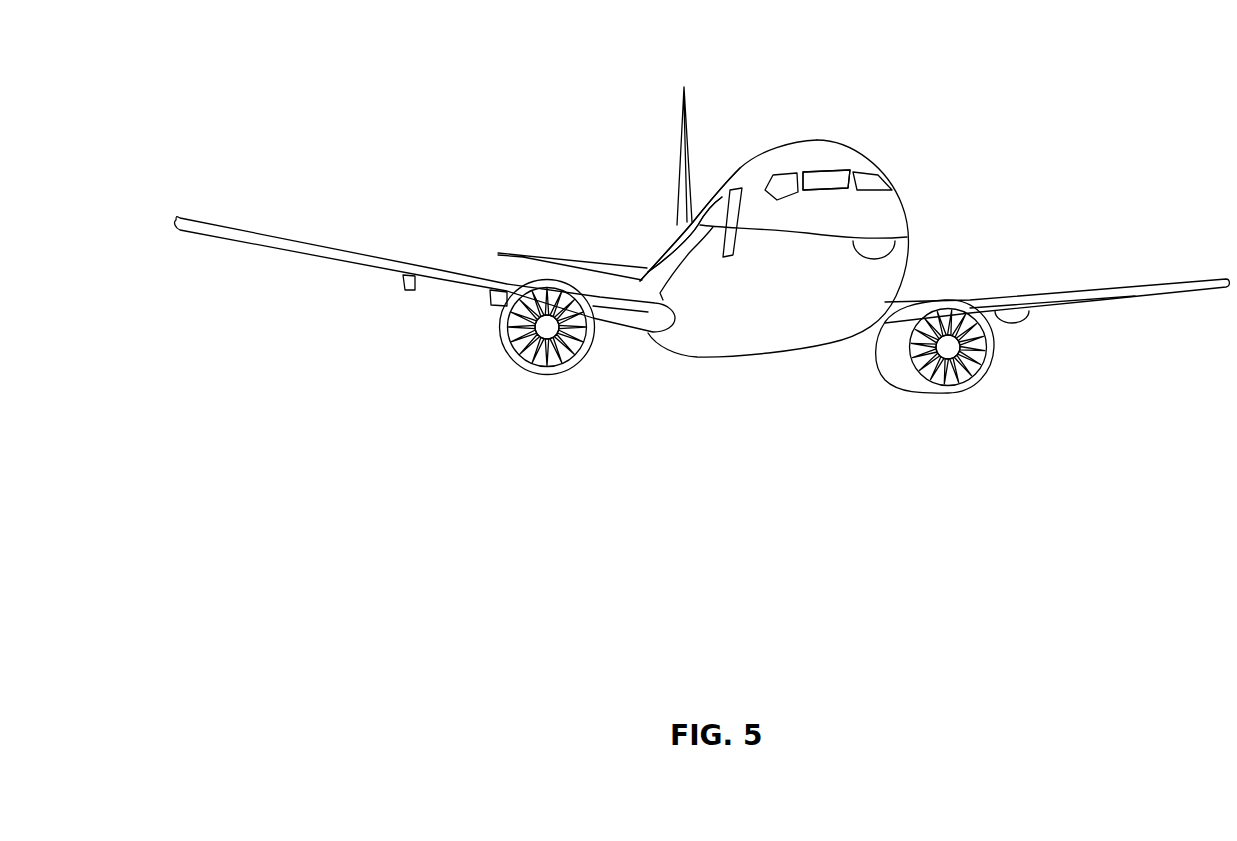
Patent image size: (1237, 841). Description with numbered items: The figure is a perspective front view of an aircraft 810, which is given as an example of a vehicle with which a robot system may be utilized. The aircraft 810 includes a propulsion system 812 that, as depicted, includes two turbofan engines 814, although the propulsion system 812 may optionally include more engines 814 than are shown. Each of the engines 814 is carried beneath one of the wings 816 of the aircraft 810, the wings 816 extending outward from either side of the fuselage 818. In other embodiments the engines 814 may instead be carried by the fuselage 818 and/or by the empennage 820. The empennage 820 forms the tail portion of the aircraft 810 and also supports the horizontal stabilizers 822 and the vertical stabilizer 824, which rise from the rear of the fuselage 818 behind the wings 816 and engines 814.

The aircraft 810 is at (443, 37).
The propulsion system 812 is at (1033, 384).
The turbofan engines 814 is at (548, 373).
The wings 816 is at (317, 247).
The fuselage 818 is at (908, 205).
The empennage 820 is at (672, 232).
The horizontal stabilizers 822 is at (538, 257).
The vertical stabilizer 824 is at (678, 130).